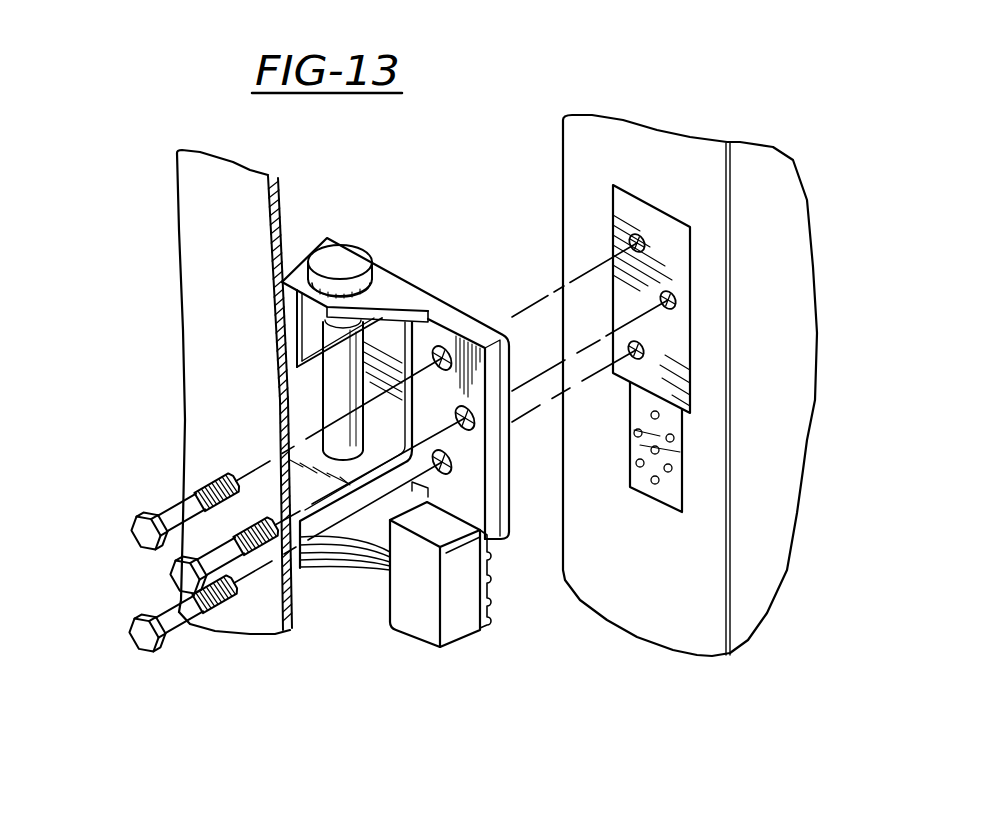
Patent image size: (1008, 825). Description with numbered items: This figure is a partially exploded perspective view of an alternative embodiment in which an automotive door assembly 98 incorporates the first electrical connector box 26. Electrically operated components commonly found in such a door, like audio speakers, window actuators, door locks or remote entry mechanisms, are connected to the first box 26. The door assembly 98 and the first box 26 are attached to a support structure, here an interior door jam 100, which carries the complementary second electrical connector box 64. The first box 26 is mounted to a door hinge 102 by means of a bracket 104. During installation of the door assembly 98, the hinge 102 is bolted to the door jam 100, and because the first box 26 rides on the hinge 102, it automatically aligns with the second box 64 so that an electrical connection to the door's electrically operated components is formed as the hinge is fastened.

The automotive door assembly 98 is at (192, 232).
The interior door jam 100 is at (657, 584).
The door hinge 102 is at (403, 292).
The second electrical connector box 64 is at (670, 483).
The first electrical connector box 26 is at (406, 618).
The bracket 104 is at (490, 620).